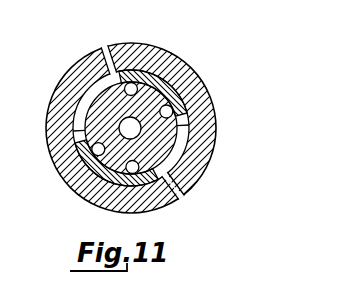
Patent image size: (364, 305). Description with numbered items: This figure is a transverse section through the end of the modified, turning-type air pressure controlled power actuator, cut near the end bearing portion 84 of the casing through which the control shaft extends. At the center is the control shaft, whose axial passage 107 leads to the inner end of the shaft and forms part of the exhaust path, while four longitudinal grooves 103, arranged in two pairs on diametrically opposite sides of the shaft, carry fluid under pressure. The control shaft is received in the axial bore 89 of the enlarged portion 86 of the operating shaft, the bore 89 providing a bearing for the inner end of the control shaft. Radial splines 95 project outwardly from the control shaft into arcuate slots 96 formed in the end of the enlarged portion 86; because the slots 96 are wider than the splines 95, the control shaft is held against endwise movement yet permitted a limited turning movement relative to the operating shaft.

The end bearing portion 84 is at (171, 56).
The enlarged portion 86 is at (186, 70).
The axial bore 89 is at (182, 152).
The radial splines 95 is at (86, 94).
The arcuate slots 96 is at (104, 50).
The longitudinal grooves 103 is at (135, 84).
The axial passage 107 is at (131, 134).